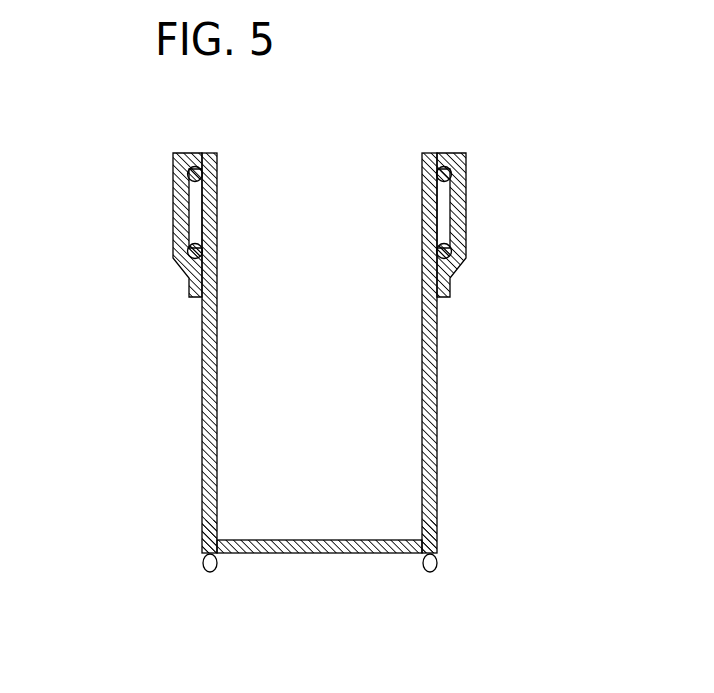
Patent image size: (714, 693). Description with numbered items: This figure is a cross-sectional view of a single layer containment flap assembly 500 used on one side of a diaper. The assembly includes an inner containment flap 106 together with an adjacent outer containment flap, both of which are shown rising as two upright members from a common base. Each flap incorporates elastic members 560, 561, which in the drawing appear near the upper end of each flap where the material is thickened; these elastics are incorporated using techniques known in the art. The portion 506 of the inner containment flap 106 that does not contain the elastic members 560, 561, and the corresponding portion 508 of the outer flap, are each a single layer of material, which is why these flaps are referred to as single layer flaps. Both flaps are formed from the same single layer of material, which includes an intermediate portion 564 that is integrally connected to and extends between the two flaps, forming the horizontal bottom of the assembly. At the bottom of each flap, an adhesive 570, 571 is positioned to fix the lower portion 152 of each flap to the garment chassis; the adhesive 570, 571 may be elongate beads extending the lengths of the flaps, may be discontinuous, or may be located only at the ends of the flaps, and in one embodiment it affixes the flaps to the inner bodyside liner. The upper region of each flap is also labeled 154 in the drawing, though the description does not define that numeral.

The single layer containment flap assembly 500 is at (143, 145).
The inner containment flap 106 is at (413, 187).
The mounting bracket 154 is at (198, 153).
The elastic member 561 is at (190, 176).
The elastic member 560 is at (190, 250).
The portion of the inner containment flap 506 is at (202, 393).
The portion of the outer containment flap 508 is at (437, 392).
The intermediate portion 564 is at (292, 540).
The lower portion 152 is at (202, 548).
The adhesive 570 is at (211, 572).
The adhesive 571 is at (430, 572).